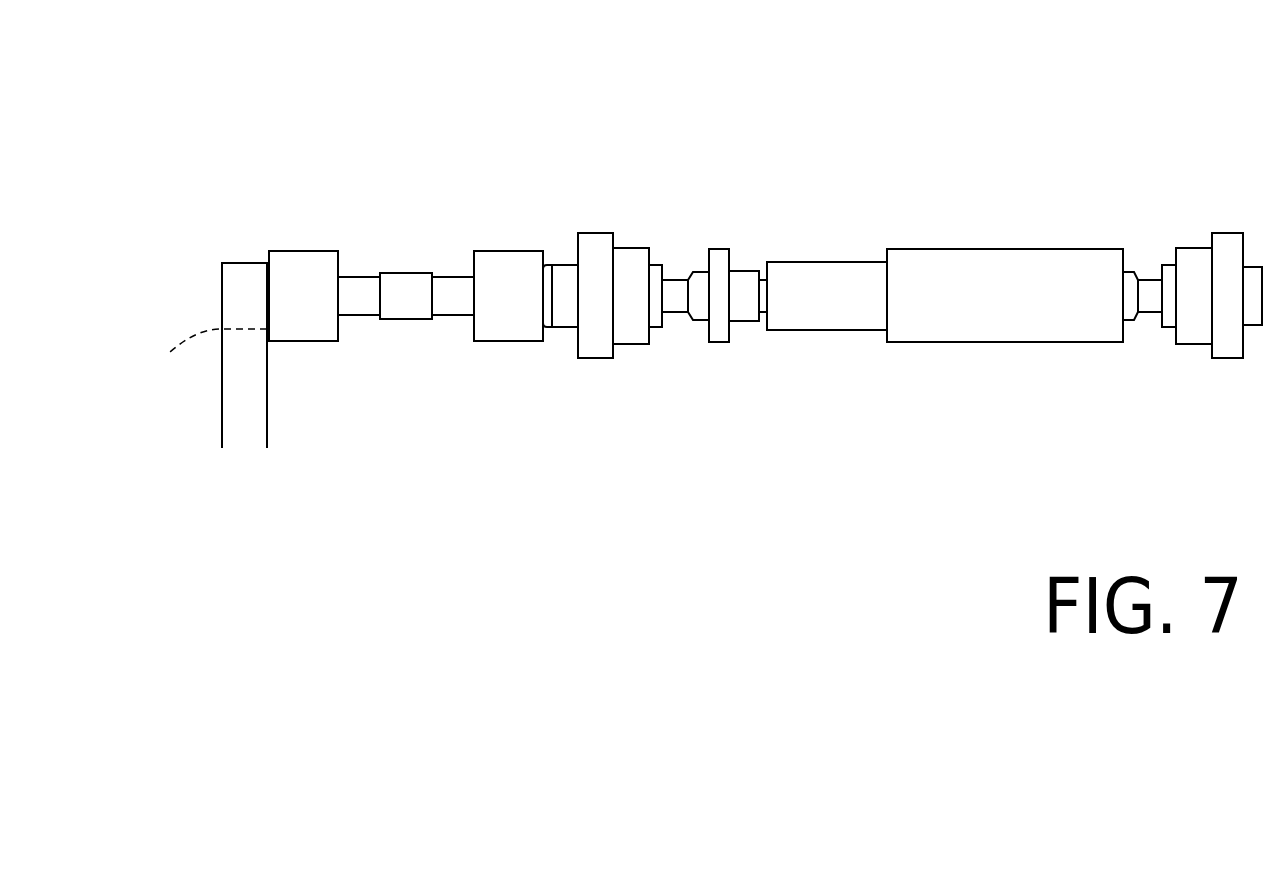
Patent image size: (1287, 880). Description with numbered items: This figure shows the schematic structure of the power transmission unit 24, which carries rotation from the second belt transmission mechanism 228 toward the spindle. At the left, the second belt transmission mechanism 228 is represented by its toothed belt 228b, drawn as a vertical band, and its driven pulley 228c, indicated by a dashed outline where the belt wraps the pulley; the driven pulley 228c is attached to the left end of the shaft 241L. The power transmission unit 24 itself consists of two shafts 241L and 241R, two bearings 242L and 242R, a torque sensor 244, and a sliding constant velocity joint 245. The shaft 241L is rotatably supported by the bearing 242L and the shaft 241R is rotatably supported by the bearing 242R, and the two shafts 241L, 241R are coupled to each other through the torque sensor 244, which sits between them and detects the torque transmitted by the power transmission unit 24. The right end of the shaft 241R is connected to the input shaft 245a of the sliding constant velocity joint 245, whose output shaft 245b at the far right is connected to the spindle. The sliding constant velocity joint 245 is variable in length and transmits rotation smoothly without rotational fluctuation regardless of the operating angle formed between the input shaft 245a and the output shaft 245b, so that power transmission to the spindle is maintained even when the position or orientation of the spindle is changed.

The power transmission unit 24 is at (1123, 112).
The second belt transmission mechanism 228 is at (143, 348).
The toothed belt 228b is at (222, 432).
The driven pulley 228c is at (204, 356).
The bearing 242L is at (303, 250).
The bearing 242R is at (507, 250).
The torque sensor 244 is at (405, 273).
The shaft 241L is at (352, 315).
The shaft 241R is at (455, 315).
The sliding constant velocity joint 245 is at (1263, 228).
The input shaft 245a is at (567, 327).
The output shaft 245b is at (1253, 330).